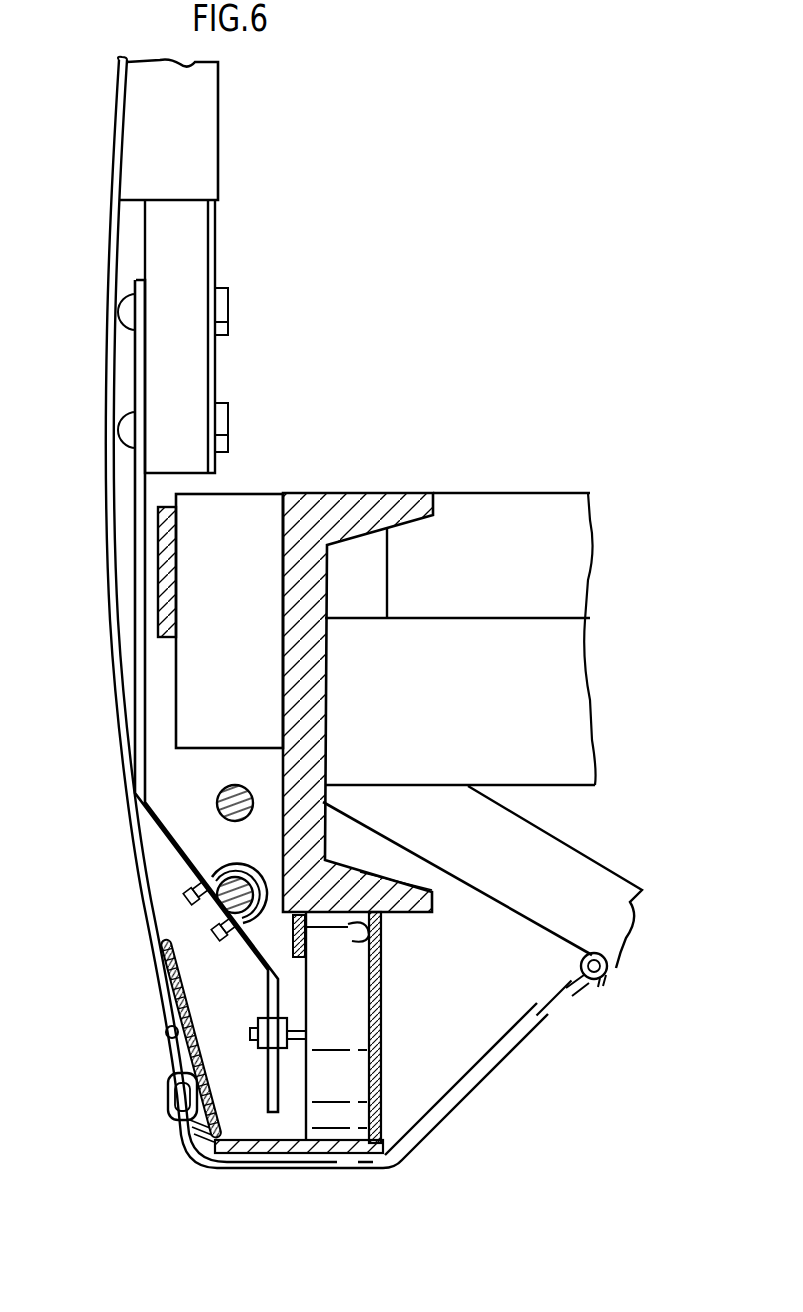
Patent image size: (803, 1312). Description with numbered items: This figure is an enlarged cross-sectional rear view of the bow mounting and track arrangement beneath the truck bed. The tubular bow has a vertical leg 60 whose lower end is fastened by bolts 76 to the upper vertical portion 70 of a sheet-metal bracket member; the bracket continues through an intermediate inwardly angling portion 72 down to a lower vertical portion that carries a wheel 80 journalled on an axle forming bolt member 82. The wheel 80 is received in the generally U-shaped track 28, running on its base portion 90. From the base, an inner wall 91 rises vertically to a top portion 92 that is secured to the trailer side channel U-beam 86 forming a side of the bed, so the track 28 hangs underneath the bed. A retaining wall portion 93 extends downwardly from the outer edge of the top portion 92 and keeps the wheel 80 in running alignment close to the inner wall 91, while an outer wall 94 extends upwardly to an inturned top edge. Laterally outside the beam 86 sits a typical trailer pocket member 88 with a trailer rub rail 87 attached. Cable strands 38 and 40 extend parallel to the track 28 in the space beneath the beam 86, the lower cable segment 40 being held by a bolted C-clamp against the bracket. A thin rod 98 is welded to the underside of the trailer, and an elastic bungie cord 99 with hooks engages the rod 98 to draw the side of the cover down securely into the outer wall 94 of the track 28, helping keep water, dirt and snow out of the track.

The track 28 is at (386, 1033).
The cable strand 38 is at (218, 800).
The cable strand 40 is at (257, 872).
The leg 60 is at (185, 240).
The upper vertical portion 70 is at (133, 645).
The intermediate inwardly angling portion 72 is at (158, 833).
The bolts 76 is at (123, 310).
The wheel 80 is at (347, 972).
The axle forming bolt member 82 is at (250, 1035).
The U-beam 86 is at (318, 710).
The trailer rub rail 87 is at (168, 520).
The trailer pocket member 88 is at (253, 638).
The base portion 90 is at (342, 1143).
The inner wall 91 is at (380, 1093).
The top portion 92 is at (370, 933).
The retaining wall portion 93 is at (310, 937).
The outer wall 94 is at (188, 1030).
The thin rod 98 is at (605, 975).
The elastic bungie cord 99 is at (438, 1103).